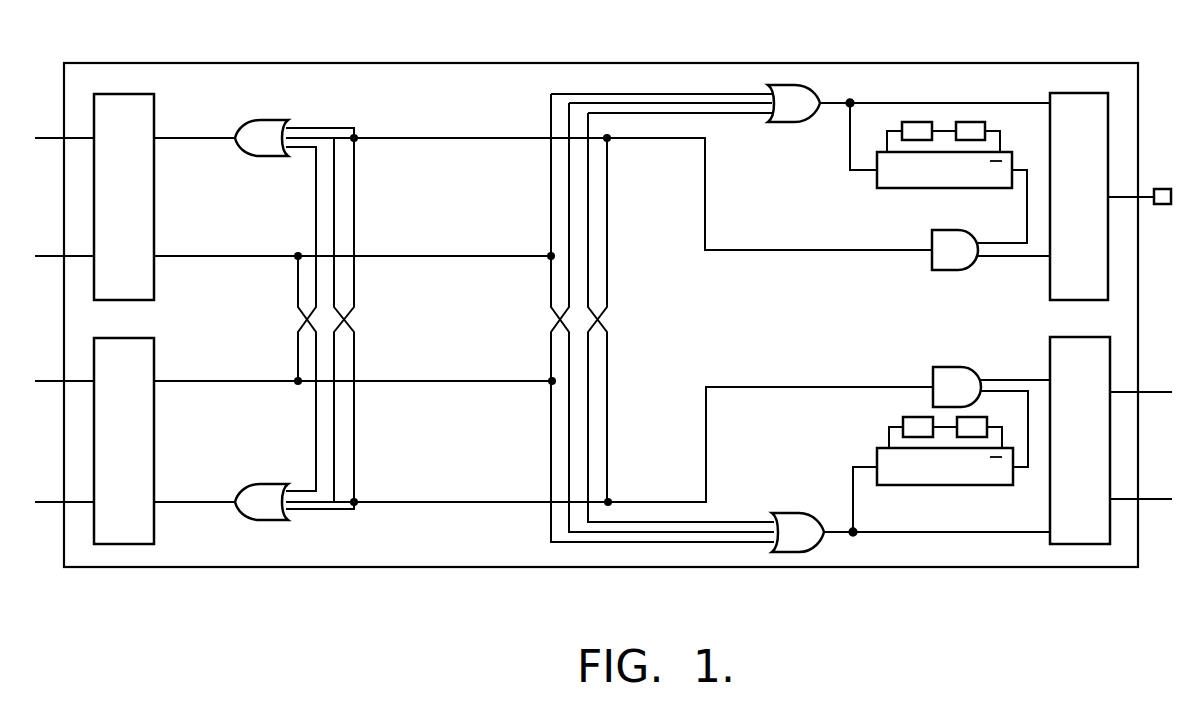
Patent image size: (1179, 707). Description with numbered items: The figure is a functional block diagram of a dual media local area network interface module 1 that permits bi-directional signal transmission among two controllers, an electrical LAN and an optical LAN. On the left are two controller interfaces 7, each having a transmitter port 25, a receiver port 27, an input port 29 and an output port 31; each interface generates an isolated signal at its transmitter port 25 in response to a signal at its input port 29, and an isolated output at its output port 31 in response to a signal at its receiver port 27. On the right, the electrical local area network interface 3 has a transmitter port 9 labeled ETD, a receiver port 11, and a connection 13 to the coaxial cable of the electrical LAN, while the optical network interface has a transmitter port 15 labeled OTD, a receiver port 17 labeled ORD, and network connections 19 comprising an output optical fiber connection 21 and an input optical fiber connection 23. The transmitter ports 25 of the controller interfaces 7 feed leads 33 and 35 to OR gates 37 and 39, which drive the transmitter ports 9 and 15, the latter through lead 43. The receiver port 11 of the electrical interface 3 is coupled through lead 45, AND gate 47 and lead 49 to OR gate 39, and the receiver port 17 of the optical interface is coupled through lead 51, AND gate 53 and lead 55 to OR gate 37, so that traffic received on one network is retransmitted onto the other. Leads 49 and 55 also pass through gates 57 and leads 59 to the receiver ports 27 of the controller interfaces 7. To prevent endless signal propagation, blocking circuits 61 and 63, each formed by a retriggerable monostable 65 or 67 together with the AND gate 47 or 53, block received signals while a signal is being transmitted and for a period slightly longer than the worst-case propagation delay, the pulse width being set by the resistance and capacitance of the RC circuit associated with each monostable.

The dual media local area network interface module 1 is at (733, 63).
The electrical local area network interface 3 is at (1110, 133).
The controller interfaces 7 is at (155, 195).
The transmitter port 9 is at (1046, 103).
The receiver port 11 is at (1047, 260).
The connection 13 is at (1160, 189).
The transmitter port 15 is at (1049, 535).
The receiver port 17 is at (1044, 378).
The network connections 19 is at (1150, 385).
The output optical fiber connection 21 is at (1147, 500).
The input optical fiber connection 23 is at (1147, 392).
The transmitter port 25 is at (155, 256).
The receiver port 27 is at (155, 138).
The input port 29 is at (45, 256).
The output port 31 is at (45, 138).
The lead 33 is at (393, 256).
The lead 35 is at (400, 381).
The OR gate 37 is at (805, 88).
The OR gate 39 is at (792, 512).
The lead 43 is at (925, 532).
The lead 45 is at (996, 258).
The AND gate 47 is at (880, 103).
The lead 49 is at (738, 256).
The lead 51 is at (1002, 379).
The AND gate 53 is at (938, 372).
The lead 55 is at (728, 387).
The gates 57 is at (270, 118).
The leads 59 is at (218, 138).
The blocking circuit 61 is at (906, 173).
The blocking circuit 63 is at (905, 454).
The retriggerable monostable 65 is at (970, 189).
The retriggerable monostable 67 is at (915, 485).